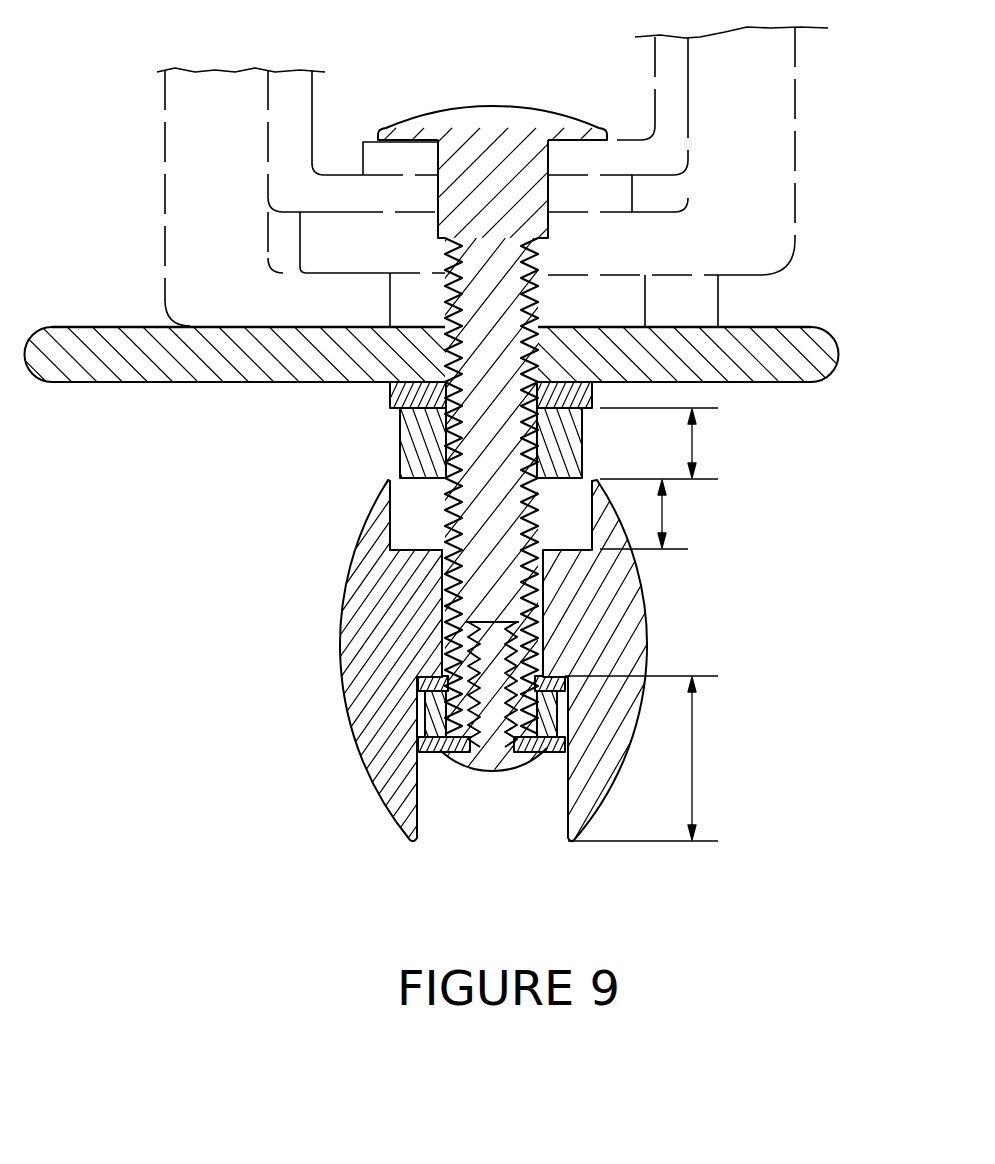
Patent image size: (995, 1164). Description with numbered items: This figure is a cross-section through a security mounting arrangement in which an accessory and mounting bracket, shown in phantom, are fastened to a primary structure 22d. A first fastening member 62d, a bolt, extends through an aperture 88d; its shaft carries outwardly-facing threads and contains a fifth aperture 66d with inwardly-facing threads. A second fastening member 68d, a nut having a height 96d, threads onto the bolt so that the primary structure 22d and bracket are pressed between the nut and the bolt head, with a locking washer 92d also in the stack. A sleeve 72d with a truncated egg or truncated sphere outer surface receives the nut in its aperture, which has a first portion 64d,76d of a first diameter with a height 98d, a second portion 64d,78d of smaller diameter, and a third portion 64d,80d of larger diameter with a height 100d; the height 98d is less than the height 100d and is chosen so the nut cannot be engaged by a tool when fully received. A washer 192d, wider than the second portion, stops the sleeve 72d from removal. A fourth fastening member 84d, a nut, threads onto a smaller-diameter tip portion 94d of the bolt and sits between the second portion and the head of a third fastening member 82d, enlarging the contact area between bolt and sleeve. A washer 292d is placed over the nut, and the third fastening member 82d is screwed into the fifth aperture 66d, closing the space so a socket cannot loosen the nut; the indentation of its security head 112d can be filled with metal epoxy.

The primary structure 22d is at (172, 360).
The first fastening member 62d is at (474, 125).
The aperture 88d is at (536, 356).
The locking washer 92d is at (407, 397).
The second fastening member 68d is at (408, 437).
The height of second fastening member 96d is at (695, 443).
The height of first portion 98d is at (665, 516).
The second portion 64d,78d is at (452, 535).
The fifth aperture 66d is at (480, 645).
The sleeve 72d is at (360, 604).
The first portion 64d,76d is at (593, 515).
The washer 192d is at (420, 680).
The smaller-diameter tip portion 94d is at (447, 712).
The fourth fastening member 84d is at (435, 728).
The washer 292d is at (422, 743).
The security head 112d is at (413, 753).
The third portion 64d,80d is at (418, 810).
The third fastening member 82d is at (533, 815).
The height of third portion 100d is at (692, 757).